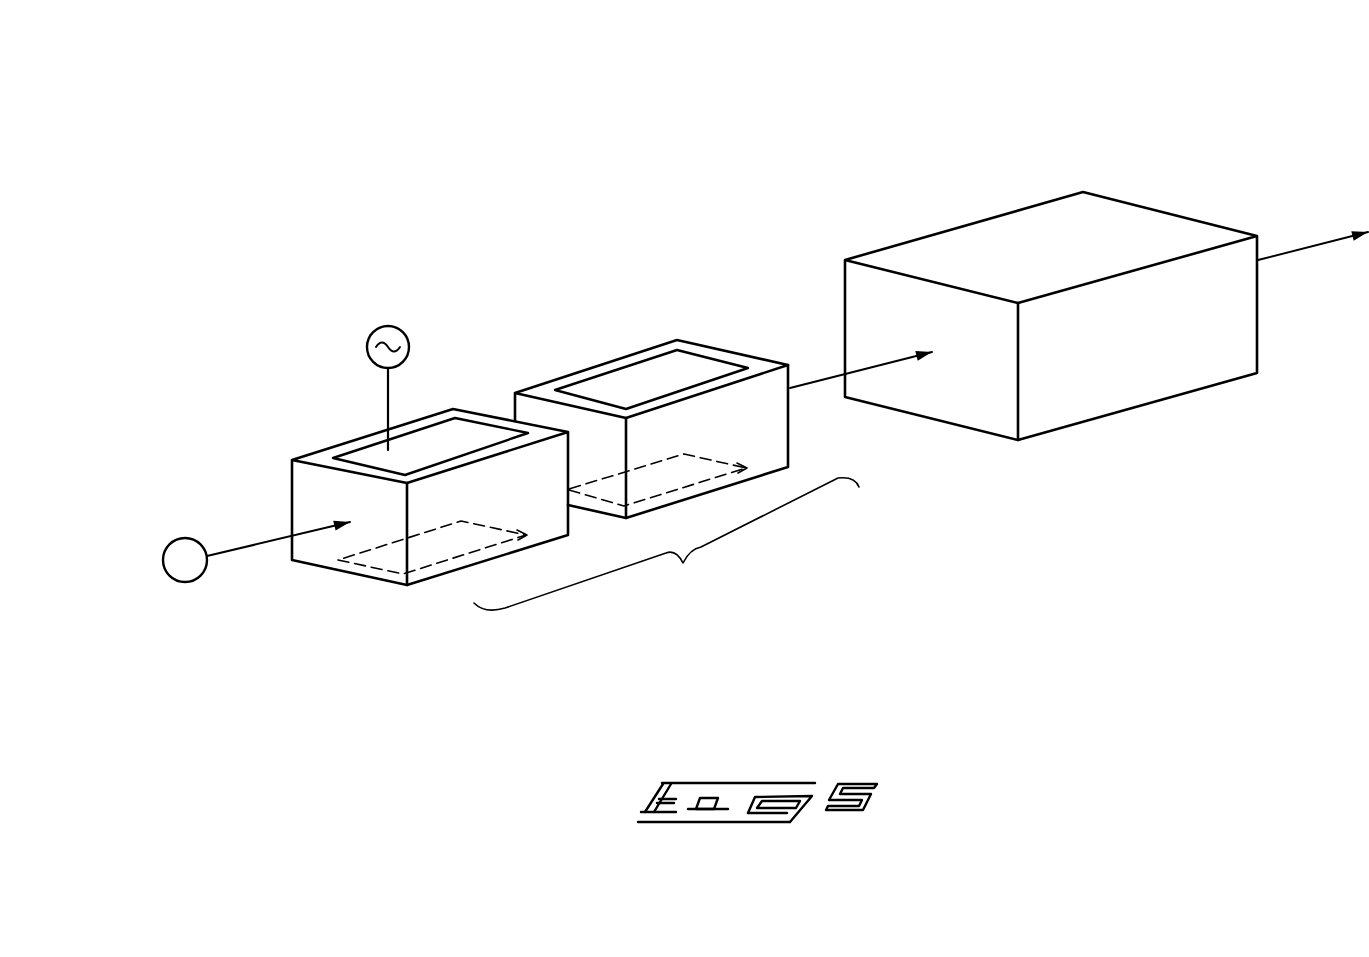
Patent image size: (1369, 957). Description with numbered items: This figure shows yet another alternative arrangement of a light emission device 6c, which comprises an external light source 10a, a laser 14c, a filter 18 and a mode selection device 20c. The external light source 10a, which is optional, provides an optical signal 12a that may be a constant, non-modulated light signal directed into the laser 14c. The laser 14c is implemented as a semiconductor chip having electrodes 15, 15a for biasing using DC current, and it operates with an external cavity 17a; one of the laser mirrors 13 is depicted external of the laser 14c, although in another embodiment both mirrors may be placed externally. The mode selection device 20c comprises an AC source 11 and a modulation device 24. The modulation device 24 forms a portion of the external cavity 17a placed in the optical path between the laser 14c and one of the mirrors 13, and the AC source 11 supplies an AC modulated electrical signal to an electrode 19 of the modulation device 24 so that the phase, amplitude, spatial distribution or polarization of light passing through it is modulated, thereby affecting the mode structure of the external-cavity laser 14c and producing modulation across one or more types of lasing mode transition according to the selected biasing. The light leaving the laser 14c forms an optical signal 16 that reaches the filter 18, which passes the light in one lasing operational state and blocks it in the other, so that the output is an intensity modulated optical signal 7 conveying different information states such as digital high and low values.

The light emission device 6c is at (128, 334).
The external light source 10a is at (169, 544).
The optical signal 12a is at (282, 537).
The modulation device 24 is at (318, 440).
The electrode 19 is at (413, 437).
The laser 14c is at (615, 353).
The electrode 15 is at (643, 372).
The electrode 15a is at (372, 563).
The mirror 13 is at (397, 513).
The mode selection device 20c is at (378, 300).
The AC source 11 is at (403, 333).
The optical signal 16 is at (860, 371).
The filter 18 is at (1140, 408).
The intensity modulated optical signal 7 is at (1338, 238).
The external cavity 17a is at (666, 544).